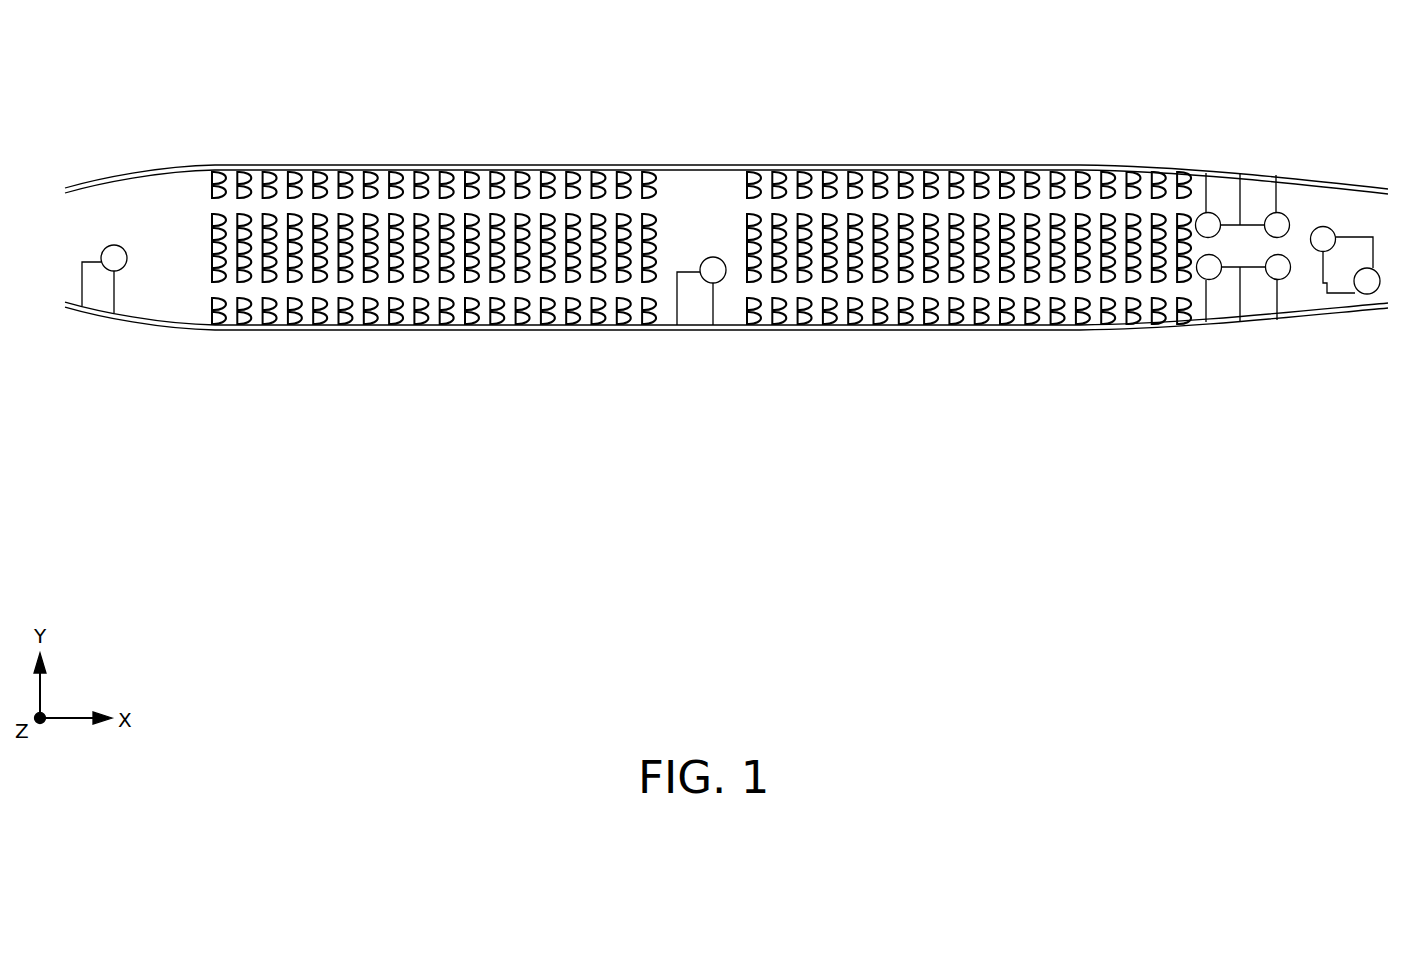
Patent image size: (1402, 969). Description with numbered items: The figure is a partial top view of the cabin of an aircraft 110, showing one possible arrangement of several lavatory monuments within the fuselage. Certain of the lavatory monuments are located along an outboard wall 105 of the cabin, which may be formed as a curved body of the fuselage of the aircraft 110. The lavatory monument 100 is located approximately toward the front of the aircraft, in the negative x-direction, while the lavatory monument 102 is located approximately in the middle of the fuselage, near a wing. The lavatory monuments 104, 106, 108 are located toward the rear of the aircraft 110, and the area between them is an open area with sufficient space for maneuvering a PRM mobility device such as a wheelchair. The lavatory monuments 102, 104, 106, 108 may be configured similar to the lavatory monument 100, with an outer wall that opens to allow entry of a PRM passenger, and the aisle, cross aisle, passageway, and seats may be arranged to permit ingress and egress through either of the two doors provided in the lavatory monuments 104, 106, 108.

The lavatory monument 100 is at (93, 330).
The lavatory monument 102 is at (688, 346).
The lavatory monument 104 is at (1228, 350).
The outboard wall 105 is at (723, 167).
The lavatory monument 106 is at (1234, 159).
The lavatory monument 108 is at (1336, 212).
The aircraft 110 is at (1044, 120).